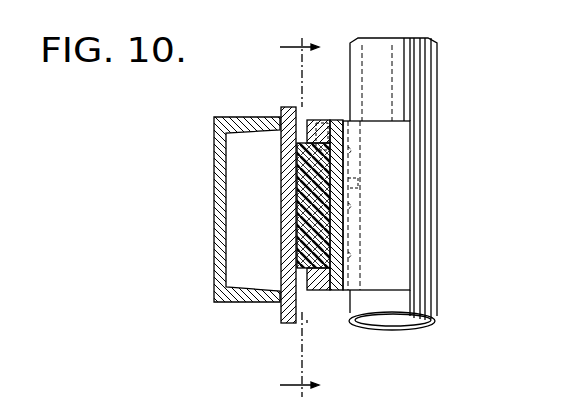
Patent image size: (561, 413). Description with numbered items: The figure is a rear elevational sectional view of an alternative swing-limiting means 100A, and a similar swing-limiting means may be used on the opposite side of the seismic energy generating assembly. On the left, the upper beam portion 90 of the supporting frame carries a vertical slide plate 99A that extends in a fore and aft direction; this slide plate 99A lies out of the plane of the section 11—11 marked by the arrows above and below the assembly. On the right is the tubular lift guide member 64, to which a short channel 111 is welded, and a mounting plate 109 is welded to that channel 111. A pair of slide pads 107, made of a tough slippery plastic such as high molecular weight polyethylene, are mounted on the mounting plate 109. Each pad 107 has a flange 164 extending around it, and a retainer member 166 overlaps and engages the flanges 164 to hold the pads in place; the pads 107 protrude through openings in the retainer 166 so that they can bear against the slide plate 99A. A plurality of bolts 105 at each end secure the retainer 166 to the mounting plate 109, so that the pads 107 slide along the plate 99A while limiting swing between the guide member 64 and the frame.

The section line 11- 11 is at (286, 217).
The tubular lift guide member 64 is at (430, 66).
The upper beam portion 90 is at (244, 116).
The vertical slide plate 99A is at (288, 162).
The swing-limiting means 100A is at (314, 328).
The bolts 105 is at (356, 256).
The slide pads 107 is at (300, 184).
The mounting plate 109 is at (347, 183).
The short channel 111 is at (403, 195).
The flange 164 is at (328, 121).
The retainer member 166 is at (325, 294).